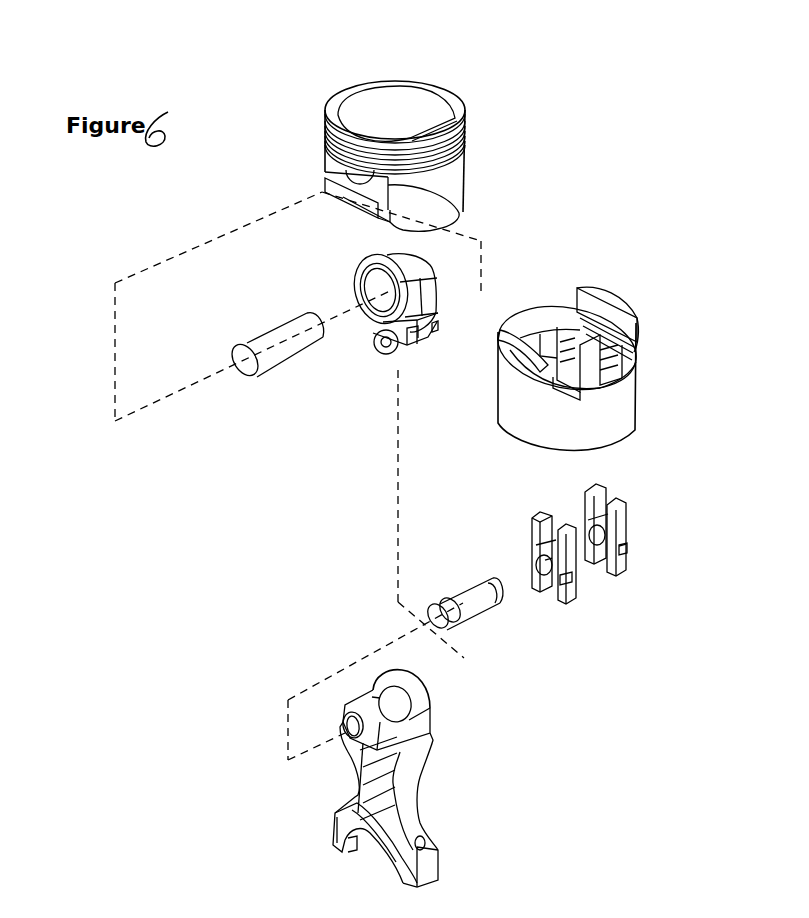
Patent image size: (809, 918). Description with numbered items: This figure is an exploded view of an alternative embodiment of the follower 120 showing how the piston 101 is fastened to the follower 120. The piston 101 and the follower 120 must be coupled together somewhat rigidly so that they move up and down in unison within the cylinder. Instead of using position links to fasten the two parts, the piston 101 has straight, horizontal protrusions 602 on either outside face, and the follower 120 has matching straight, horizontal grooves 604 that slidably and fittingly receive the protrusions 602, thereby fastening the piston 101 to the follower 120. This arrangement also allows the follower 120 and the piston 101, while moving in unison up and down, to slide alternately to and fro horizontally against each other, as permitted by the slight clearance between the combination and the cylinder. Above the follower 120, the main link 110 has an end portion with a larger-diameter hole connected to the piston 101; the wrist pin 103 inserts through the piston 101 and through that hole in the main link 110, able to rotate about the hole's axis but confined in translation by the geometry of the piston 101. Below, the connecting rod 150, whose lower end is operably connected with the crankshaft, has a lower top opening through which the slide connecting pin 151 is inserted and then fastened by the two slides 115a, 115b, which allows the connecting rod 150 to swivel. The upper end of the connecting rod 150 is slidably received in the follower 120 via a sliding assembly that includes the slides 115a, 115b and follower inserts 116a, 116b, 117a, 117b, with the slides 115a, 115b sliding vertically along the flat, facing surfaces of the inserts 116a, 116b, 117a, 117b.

The piston 101 is at (461, 98).
The straight, horizontal protrusions 602 is at (455, 207).
The wrist pin 103 is at (243, 345).
The main link 110 is at (405, 356).
The follower 120 is at (620, 297).
The straight, horizontal grooves 604 is at (640, 337).
The bearing clip 117b is at (530, 514).
The bearing clip 116b is at (570, 592).
The bearing clip 116a is at (598, 489).
The bearing clip 117a is at (626, 543).
The slide 115a is at (620, 578).
The slide 115b is at (533, 580).
The connecting rod 150 is at (468, 630).
The slide connecting pin 151 is at (332, 814).